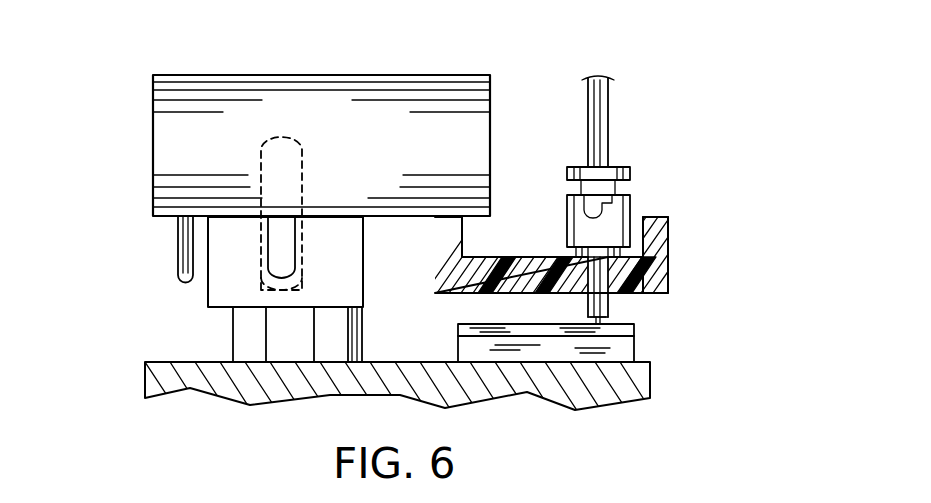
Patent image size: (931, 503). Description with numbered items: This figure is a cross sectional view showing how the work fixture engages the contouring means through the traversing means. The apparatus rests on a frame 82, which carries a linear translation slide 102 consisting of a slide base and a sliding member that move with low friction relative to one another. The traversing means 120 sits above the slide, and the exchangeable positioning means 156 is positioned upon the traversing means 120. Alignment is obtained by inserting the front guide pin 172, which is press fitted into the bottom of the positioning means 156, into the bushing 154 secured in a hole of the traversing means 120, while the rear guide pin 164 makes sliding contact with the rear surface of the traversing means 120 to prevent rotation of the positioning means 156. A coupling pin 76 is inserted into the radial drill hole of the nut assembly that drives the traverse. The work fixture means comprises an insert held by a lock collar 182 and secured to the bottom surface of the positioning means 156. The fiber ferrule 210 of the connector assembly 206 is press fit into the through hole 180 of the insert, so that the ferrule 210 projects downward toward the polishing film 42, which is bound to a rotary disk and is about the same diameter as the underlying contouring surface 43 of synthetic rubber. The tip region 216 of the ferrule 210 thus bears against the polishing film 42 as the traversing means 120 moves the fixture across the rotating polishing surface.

The polishing film 42 is at (458, 328).
The contouring surface 43 is at (637, 346).
The coupling pin 76 is at (358, 350).
The frame 82 is at (145, 380).
The linear translation slide 102 is at (233, 327).
The traversing means 120 is at (345, 237).
The bushing 154 is at (302, 268).
The positioning means 156 is at (470, 100).
The rear guide pin 164 is at (185, 250).
The front guide pin 172 is at (285, 230).
The through hole 180 is at (548, 272).
The lock collar 182 is at (669, 262).
The fiber connector 206 is at (632, 212).
The ferrule 210 is at (612, 100).
The probe tip 216 is at (588, 316).